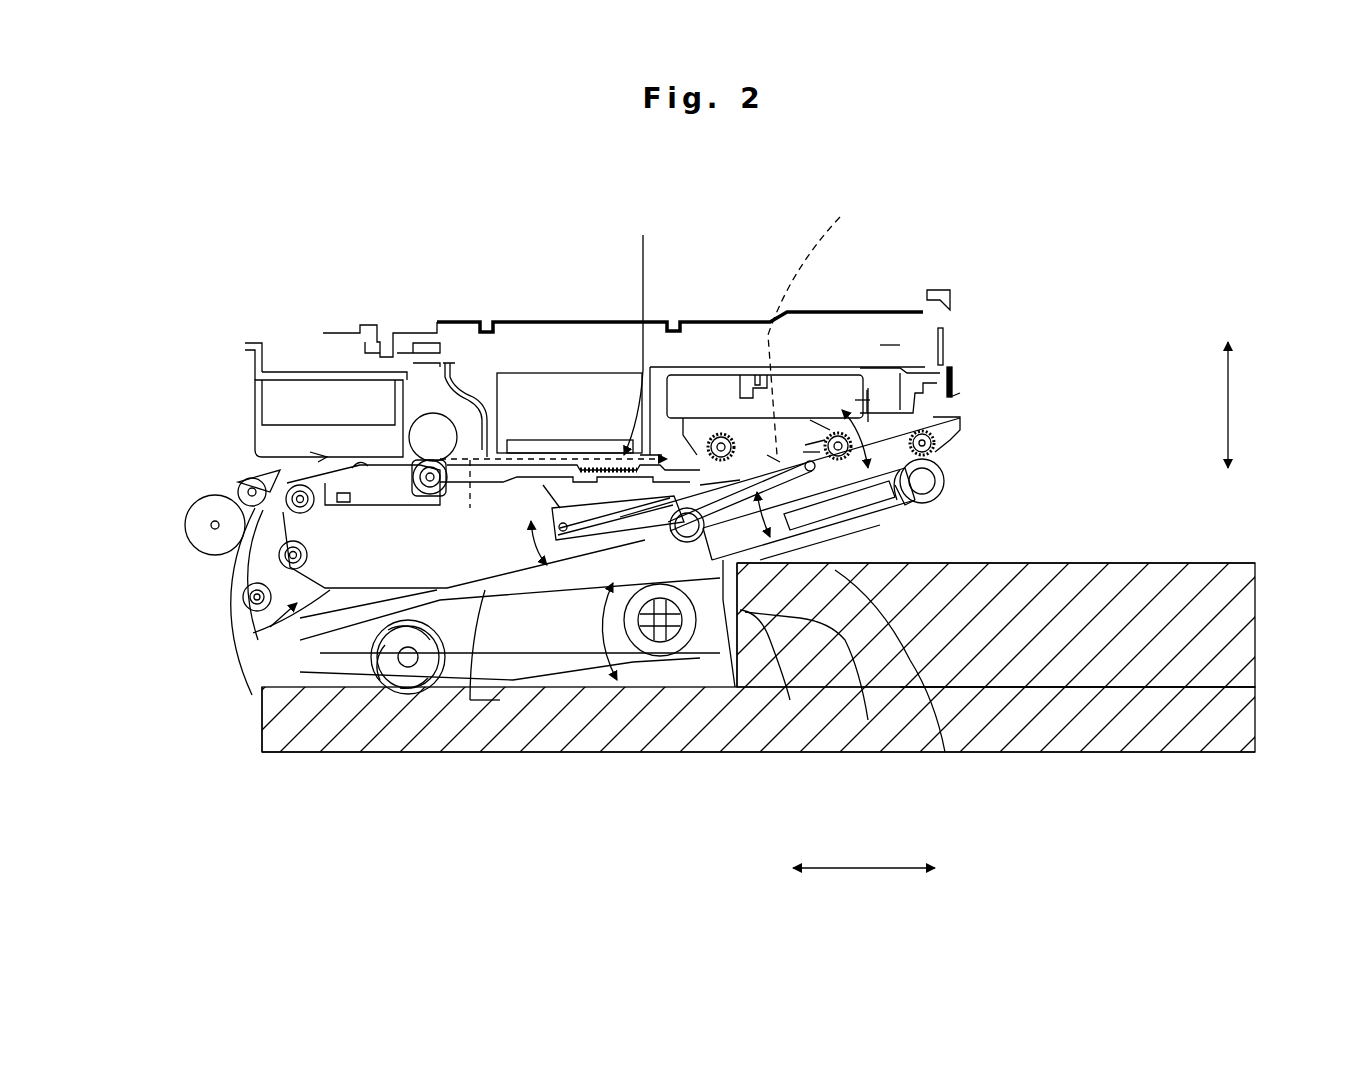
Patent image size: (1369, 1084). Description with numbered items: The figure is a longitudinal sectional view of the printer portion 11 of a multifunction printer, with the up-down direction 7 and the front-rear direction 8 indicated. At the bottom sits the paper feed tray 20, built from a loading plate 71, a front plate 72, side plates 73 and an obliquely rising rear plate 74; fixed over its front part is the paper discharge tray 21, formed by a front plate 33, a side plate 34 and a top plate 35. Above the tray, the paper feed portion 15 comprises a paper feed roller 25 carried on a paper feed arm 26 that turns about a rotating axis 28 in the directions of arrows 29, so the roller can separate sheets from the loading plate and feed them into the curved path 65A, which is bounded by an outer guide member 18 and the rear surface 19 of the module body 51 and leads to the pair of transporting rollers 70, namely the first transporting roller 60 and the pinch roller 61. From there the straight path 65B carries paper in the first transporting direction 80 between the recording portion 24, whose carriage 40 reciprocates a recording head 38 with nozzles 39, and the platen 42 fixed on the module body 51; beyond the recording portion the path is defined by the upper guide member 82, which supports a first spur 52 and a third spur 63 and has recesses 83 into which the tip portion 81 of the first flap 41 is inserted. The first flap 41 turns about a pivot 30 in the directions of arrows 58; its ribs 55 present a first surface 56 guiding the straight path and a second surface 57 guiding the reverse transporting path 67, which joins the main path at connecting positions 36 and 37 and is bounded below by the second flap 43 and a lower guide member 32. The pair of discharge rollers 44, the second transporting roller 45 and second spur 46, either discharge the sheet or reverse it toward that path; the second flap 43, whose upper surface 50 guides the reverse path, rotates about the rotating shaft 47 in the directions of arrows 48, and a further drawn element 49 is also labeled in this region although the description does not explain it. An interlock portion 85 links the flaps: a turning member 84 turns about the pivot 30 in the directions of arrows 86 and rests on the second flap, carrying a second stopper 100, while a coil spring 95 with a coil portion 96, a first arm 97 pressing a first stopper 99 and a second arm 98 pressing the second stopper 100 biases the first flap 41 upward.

The up-down direction 7 is at (1232, 413).
The front-rear direction 8 is at (850, 872).
The printer portion 11 is at (281, 226).
The paper feed portion 15 is at (553, 672).
The outer guide member 18 is at (225, 570).
The rear surface 19 is at (363, 470).
The paper feed tray 20 is at (1040, 796).
The paper discharge tray 21 is at (1128, 537).
The recording portion 24 is at (513, 362).
The paper feed roller 25 is at (380, 692).
The paper feed arm 26 is at (512, 674).
The rotating axis 28 is at (667, 657).
The arrows 29 is at (630, 664).
The pivot 30 is at (723, 600).
The lower guide member 32 is at (333, 655).
The front plate 33 is at (1256, 618).
The side plate 34 is at (1178, 622).
The top plate 35 is at (1058, 563).
The connecting position 36 is at (884, 456).
The connecting position 37 is at (248, 478).
The recording head 38 is at (543, 437).
The nozzles 39 is at (597, 460).
The carriage 40 is at (622, 445).
The first flap 41 is at (758, 467).
The platen 42 is at (543, 485).
The second flap 43 is at (942, 541).
The pair of discharge rollers 44 is at (958, 466).
The second transporting roller 45 is at (945, 490).
The second spur 46 is at (936, 451).
The rotating shaft 47 is at (925, 490).
The arrows 48 is at (898, 532).
The guide wall 49 is at (868, 720).
The upper surface 50 is at (860, 548).
The module body 51 is at (403, 573).
The first spur 52 is at (708, 455).
The ribs 55 is at (706, 438).
The first surface 56 is at (812, 447).
The second surface 57 is at (836, 460).
The arrows 58 is at (880, 345).
The first transporting roller 60 is at (448, 418).
The pinch roller 61 is at (427, 507).
The third spur 63 is at (860, 400).
The curved path 65A is at (320, 468).
The straight path 65B is at (656, 331).
The reverse transporting path 67 is at (253, 633).
The pair of transporting rollers 70 is at (403, 410).
The loading plate 71 is at (1190, 753).
The front plate 72 is at (1256, 735).
The side plate 73 is at (1092, 722).
The rear plate 74 is at (262, 720).
The first transporting direction 80 is at (553, 500).
The tip portion 81 is at (803, 452).
The upper guide member 82 is at (952, 395).
The recesses 83 is at (815, 325).
The turning member 84 is at (628, 538).
The interlock portion 85 is at (673, 502).
The arrows 86 is at (768, 515).
The coil spring 95 is at (945, 752).
The coil portion 96 is at (790, 700).
The first arm 97 is at (767, 455).
The second arm 98 is at (600, 520).
The first stopper 99 is at (820, 418).
The second stopper 100 is at (562, 542).